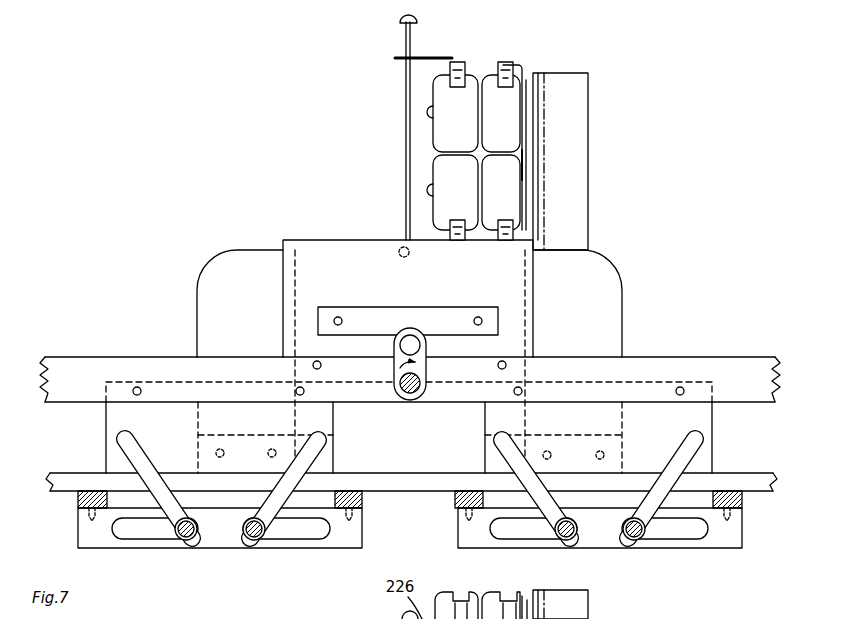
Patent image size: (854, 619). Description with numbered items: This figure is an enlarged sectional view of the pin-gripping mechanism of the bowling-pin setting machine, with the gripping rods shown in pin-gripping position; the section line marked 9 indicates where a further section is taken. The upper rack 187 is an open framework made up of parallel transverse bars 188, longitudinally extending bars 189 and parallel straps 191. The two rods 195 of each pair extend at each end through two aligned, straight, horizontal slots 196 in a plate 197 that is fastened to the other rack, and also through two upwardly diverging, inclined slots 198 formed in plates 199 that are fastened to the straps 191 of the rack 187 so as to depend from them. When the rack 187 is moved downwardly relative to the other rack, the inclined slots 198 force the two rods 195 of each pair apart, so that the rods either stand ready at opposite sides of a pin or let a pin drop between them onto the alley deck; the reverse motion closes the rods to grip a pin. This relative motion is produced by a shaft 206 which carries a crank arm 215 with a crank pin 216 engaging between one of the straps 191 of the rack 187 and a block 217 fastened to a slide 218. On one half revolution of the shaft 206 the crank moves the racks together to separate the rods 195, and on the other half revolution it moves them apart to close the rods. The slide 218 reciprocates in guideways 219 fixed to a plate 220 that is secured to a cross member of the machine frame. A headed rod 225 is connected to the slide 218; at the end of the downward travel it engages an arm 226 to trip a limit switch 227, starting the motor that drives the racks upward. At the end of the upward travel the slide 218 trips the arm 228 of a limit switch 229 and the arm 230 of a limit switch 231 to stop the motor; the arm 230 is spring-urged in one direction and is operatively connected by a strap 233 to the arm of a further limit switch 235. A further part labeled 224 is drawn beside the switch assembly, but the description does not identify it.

The section line 9- 9 is at (409, 330).
The rack 187 is at (728, 344).
The transverse bars 188 is at (78, 504).
The longitudinally extending bars 189 is at (730, 480).
The straps 191 is at (637, 357).
The rods 195 is at (188, 540).
The horizontal slots 196 is at (148, 540).
The plate 197 is at (362, 538).
The inclined slots 198 is at (118, 446).
The plates 199 is at (106, 420).
The shaft 206 is at (424, 387).
The crank arm 215 is at (396, 352).
The crank pin 216 is at (420, 346).
The block 217 is at (448, 320).
The slide 218 is at (322, 246).
The guideways 219 is at (200, 293).
The plate 220 is at (582, 113).
The bus bar 224 is at (500, 72).
The headed rod 225 is at (406, 165).
The arm 226 is at (433, 58).
The limit switch 227 is at (452, 113).
The arm 228 is at (457, 237).
The limit switch 229 is at (452, 192).
The arm 230 is at (502, 237).
The limit switch 231 is at (501, 192).
The strap 233 is at (524, 168).
The limit switch 235 is at (501, 113).